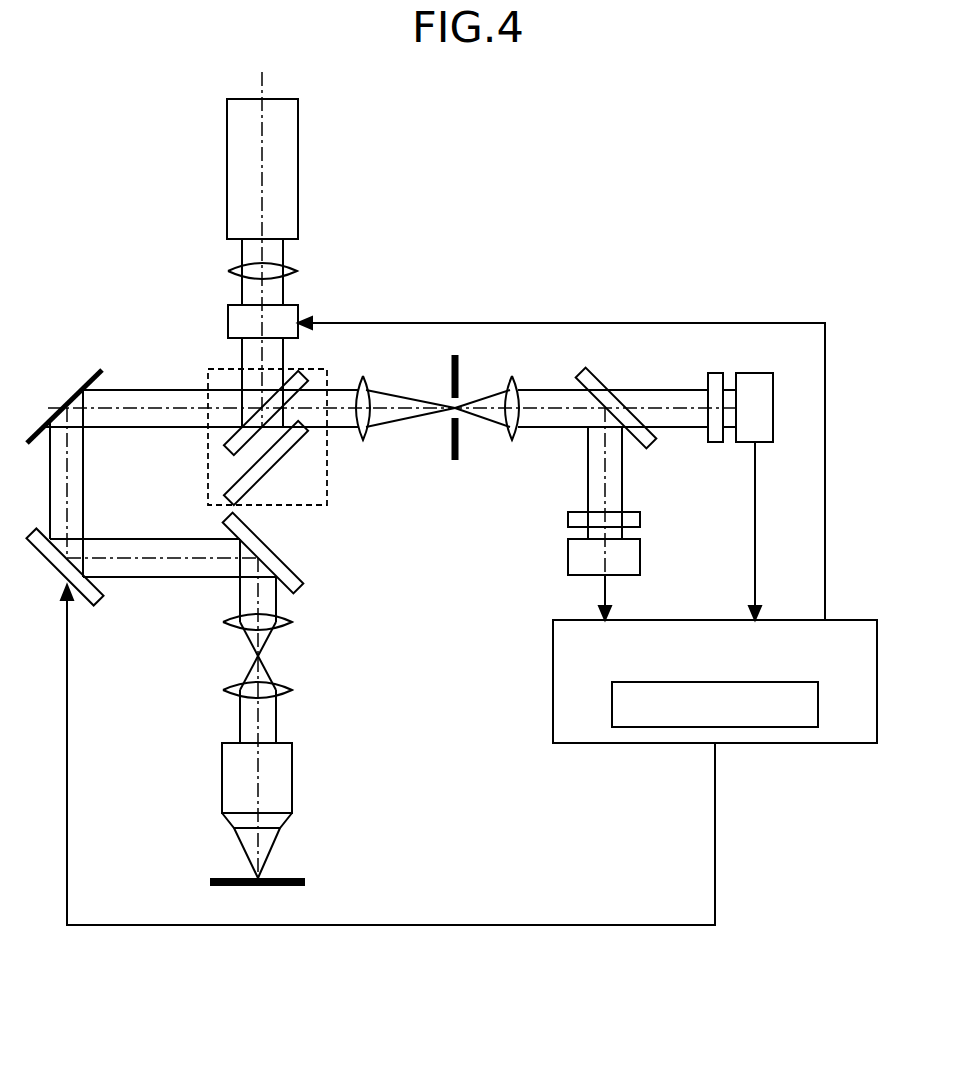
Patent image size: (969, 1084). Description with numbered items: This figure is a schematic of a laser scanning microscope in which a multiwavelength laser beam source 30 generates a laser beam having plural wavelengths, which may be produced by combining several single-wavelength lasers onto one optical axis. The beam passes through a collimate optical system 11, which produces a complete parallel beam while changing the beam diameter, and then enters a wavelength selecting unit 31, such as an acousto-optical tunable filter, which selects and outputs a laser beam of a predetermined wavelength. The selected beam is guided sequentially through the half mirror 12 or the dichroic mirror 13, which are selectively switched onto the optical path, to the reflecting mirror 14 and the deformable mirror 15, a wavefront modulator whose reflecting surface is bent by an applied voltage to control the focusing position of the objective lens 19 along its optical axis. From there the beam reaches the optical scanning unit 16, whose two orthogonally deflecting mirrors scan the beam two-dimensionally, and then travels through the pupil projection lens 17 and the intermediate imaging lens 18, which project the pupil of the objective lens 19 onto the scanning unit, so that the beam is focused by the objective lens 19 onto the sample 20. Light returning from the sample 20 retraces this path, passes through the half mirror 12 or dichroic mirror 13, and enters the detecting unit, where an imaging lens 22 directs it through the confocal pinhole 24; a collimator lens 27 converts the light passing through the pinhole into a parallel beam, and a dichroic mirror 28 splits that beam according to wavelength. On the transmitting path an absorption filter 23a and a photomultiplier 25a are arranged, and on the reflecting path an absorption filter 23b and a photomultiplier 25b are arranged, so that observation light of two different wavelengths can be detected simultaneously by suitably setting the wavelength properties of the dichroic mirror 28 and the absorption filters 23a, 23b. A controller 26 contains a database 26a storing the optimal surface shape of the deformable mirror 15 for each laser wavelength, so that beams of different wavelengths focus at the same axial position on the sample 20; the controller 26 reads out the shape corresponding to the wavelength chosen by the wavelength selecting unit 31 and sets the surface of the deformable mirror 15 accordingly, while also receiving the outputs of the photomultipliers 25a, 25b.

The multiwavelength laser beam source 30 is at (290, 183).
The collimate optical system 11 is at (272, 268).
The wavelength selecting unit 31 is at (290, 313).
The half mirror 12 is at (300, 380).
The dichroic mirror 13 is at (293, 445).
The reflecting mirror 14 is at (73, 392).
The deformable mirror 15 is at (45, 550).
The optical scanning unit 16 is at (273, 560).
The pupil projection lens 17 is at (280, 625).
The intermediate imaging lens 18 is at (280, 693).
The objective lens 19 is at (285, 798).
The sample 20 is at (290, 878).
The imaging lens 22 is at (368, 388).
The confocal pinhole 24 is at (460, 372).
The collimator lens 27 is at (515, 378).
The dichroic mirror 28 is at (597, 380).
The absorption filter 23a is at (715, 445).
The photomultiplier 25a is at (765, 445).
The absorption filter 23b is at (573, 518).
The photomultiplier 25b is at (573, 557).
The controller 26 is at (877, 678).
The database 26a is at (818, 703).